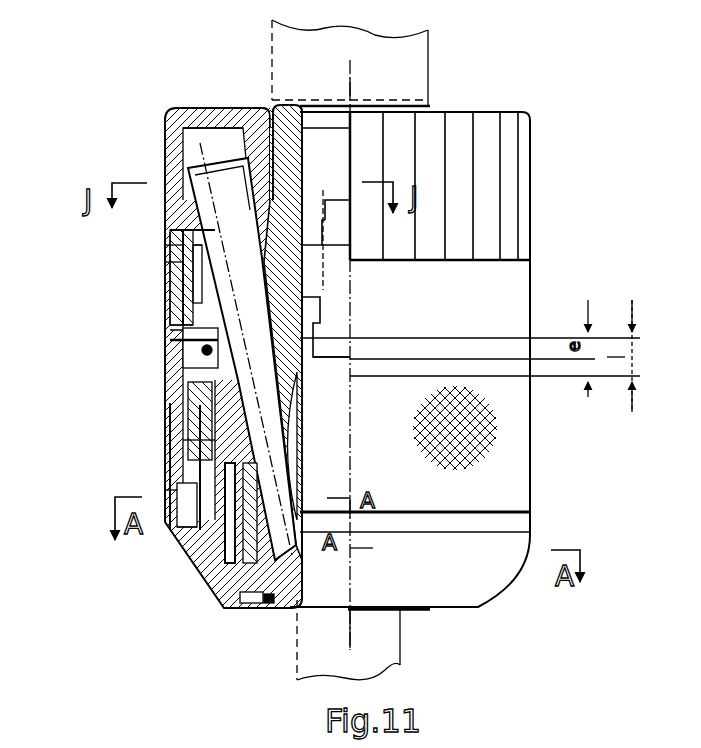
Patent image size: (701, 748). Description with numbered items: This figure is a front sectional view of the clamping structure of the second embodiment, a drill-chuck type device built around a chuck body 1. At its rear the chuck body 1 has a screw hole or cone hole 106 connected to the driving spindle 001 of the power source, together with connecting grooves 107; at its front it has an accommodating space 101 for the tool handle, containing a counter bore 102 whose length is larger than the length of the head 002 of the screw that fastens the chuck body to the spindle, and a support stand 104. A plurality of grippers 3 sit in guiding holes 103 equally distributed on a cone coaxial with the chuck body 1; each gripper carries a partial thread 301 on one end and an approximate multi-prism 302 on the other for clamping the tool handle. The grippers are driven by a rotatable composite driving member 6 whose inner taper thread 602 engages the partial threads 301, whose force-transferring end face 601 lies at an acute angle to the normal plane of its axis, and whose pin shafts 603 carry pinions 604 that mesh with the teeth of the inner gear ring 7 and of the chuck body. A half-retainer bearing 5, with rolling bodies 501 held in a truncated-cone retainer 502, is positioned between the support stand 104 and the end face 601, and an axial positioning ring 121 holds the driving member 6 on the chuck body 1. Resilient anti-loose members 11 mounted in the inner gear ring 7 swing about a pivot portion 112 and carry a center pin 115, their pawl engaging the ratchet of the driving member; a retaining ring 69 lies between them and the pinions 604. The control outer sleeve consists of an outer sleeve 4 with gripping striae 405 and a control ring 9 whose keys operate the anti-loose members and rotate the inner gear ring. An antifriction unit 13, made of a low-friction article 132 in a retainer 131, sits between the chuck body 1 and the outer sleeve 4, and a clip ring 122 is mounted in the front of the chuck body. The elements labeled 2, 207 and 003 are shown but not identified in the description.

The chuck body 1 is at (287, 147).
The cap 2 is at (208, 118).
The grippers 3 is at (236, 225).
The outer sleeve 4 is at (172, 334).
The half-retainer bearing 5 is at (141, 275).
The driving member 6 is at (213, 378).
The inner gear ring 7 is at (172, 540).
The control ring 9 is at (188, 440).
The resilient anti-loose member 11 is at (101, 476).
The antifriction unit 13 is at (102, 231).
The retaining ring 69 is at (195, 542).
The accommodating space 101 is at (328, 465).
The counter bore 102 is at (300, 428).
The guiding holes 103 is at (270, 280).
The support stand 104 is at (185, 310).
The screw hole or cone hole 106 is at (323, 140).
The connecting grooves 107 is at (265, 207).
The pivot portion 112 is at (168, 494).
The center pin 115 is at (190, 498).
The axial positioning ring 121 is at (222, 579).
The clip ring 122 is at (262, 607).
The retainer 131 is at (165, 250).
The article 132 is at (180, 272).
The cap rim 207 is at (265, 185).
The partial thread 301 is at (172, 170).
The approximate multi-prism 302 is at (300, 471).
The striae 405 is at (328, 367).
The rolling bodies 501 is at (178, 335).
The retainer 502 is at (165, 327).
The force-transferring end face 601 is at (178, 357).
The inner taper thread 602 is at (258, 348).
The pin shafts 603 is at (195, 450).
The pinions 604 is at (222, 552).
The driving spindle 001 is at (375, 62).
The head 002 is at (332, 344).
The output shaft 003 is at (380, 652).